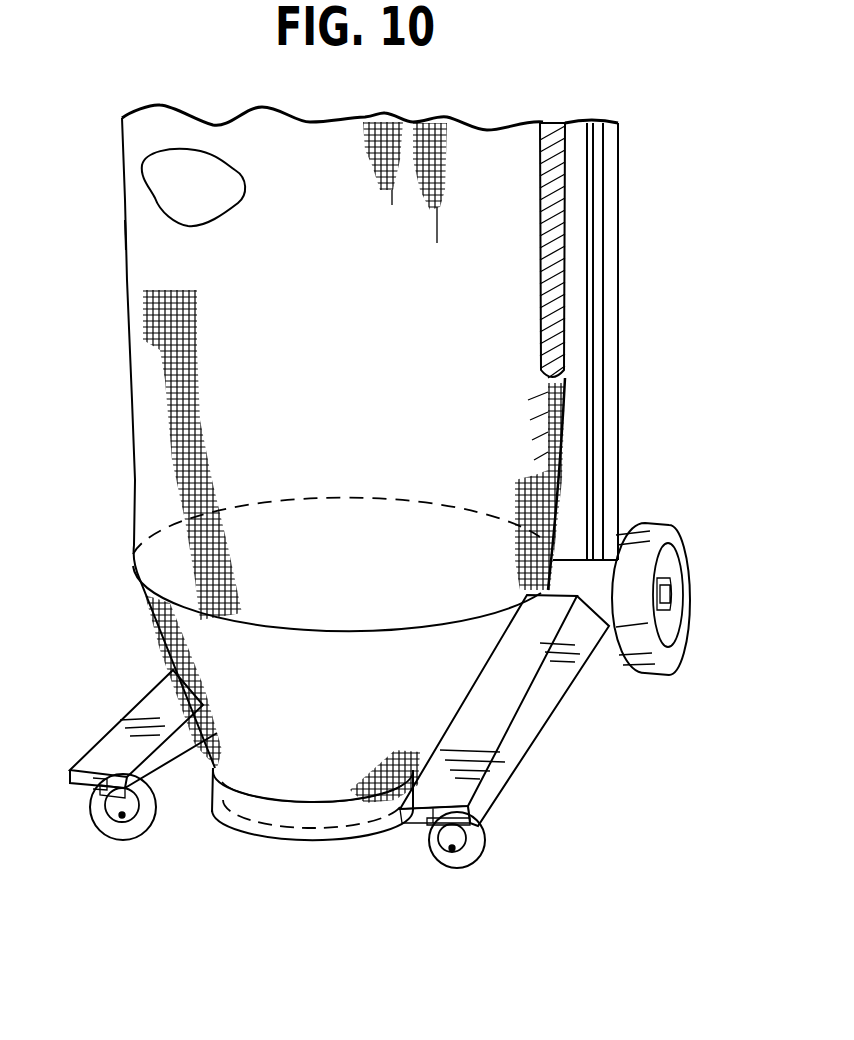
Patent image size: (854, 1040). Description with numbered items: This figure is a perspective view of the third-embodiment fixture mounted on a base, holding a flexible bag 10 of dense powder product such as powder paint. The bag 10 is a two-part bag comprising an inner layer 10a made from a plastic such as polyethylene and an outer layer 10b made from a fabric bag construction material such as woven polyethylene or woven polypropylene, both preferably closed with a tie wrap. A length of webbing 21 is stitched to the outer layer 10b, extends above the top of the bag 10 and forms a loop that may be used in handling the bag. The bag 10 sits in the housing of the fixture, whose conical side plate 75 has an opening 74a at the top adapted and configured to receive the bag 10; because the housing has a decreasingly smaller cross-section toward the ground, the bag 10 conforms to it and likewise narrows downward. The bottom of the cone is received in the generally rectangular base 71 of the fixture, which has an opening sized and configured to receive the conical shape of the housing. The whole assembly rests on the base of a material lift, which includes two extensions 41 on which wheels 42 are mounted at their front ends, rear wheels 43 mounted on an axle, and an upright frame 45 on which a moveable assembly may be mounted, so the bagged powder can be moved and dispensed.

The flexible bag 10 is at (135, 332).
The inner layer 10a is at (162, 173).
The outer layer 10b is at (150, 242).
The webbing 21 is at (568, 290).
The upright frame 45 is at (612, 380).
The rear wheels 43 is at (673, 653).
The opening 74a is at (338, 538).
The extensions 41 is at (172, 748).
The wheels 42 is at (130, 835).
The side plate 75 is at (278, 760).
The base 71 is at (328, 828).